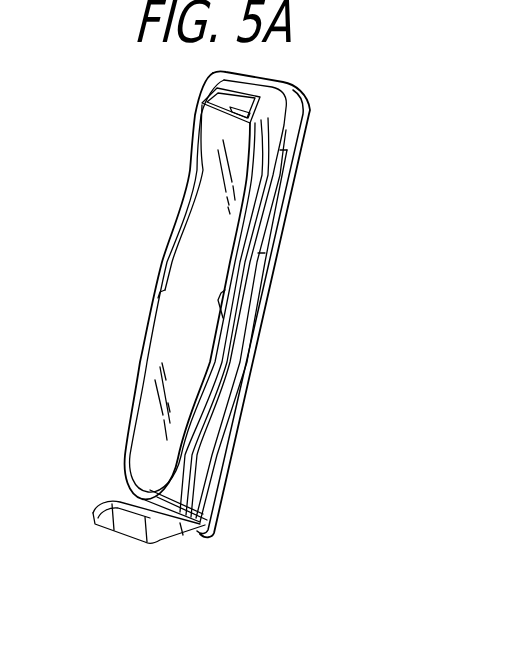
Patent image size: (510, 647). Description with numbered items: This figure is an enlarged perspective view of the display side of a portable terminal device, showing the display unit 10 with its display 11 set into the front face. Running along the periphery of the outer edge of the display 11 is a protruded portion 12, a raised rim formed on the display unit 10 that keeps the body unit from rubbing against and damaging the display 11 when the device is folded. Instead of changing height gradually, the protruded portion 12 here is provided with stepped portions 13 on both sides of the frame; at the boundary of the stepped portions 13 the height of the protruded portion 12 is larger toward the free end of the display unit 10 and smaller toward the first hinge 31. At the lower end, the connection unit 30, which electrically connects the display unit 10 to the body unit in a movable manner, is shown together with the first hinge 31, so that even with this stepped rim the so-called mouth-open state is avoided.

The display unit 10 is at (295, 177).
The display 11 is at (188, 372).
The protruded portion 12 is at (192, 160).
The stepped portions 13 is at (160, 290).
The connection unit 30 is at (217, 483).
The first hinge 31 is at (173, 540).